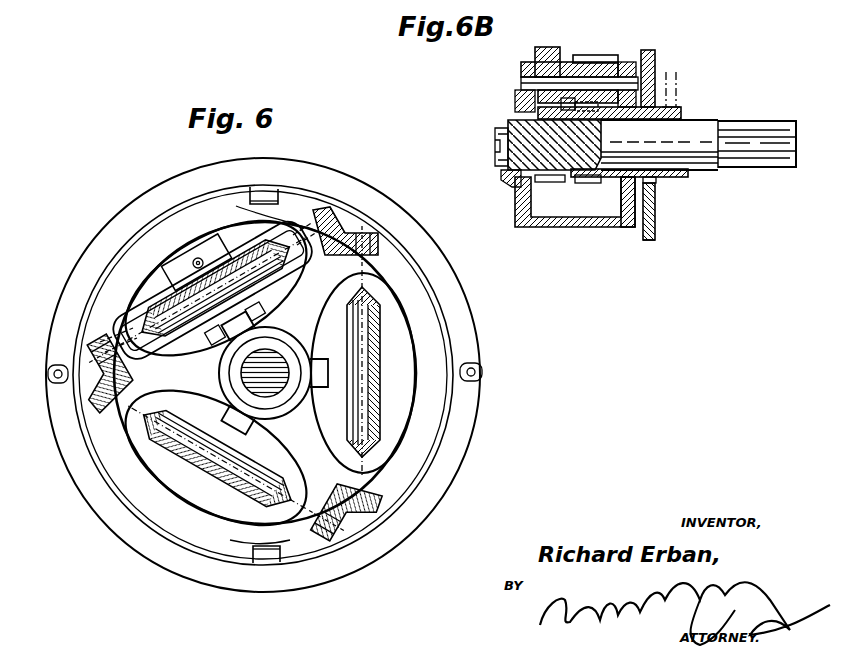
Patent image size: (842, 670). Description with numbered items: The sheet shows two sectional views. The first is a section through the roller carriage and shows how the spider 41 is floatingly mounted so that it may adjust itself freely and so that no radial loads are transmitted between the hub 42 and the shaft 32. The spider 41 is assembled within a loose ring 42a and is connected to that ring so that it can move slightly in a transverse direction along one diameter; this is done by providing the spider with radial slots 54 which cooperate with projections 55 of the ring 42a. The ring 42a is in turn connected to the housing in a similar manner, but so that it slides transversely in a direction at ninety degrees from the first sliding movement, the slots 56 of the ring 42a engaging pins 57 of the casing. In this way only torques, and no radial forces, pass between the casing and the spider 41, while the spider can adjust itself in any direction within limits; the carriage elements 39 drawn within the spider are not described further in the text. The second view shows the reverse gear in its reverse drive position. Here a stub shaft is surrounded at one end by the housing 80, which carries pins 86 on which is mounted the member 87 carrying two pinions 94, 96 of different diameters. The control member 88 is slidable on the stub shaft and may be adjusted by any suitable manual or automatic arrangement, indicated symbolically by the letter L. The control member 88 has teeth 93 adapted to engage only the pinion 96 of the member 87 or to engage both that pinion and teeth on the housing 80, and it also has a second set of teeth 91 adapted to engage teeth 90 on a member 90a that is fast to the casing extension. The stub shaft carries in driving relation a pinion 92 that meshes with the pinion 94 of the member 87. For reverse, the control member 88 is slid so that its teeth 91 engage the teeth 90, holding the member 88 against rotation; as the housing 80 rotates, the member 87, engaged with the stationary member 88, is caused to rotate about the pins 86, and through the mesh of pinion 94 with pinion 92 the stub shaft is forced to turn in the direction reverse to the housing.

In FIG. 6, the shaft 32 is at (268, 382).
In FIG. 6, the vane / lever 39 is at (155, 292).
In FIG. 6, the spider 41 is at (398, 280).
In FIG. 6, the hub 42 is at (266, 356).
In FIG. 6, the loose ring 42a is at (452, 291).
In FIG. 6, the radial slots 54 is at (256, 210).
In FIG. 6, the projections 55 is at (262, 195).
In FIG. 6, the slots 56 is at (58, 366).
In FIG. 6, the pins 57 is at (56, 384).
In FIG. 6B, the housing 80 is at (540, 228).
In FIG. 6B, the pins 86 is at (655, 62).
In FIG. 6B, the member 87 is at (568, 62).
In FIG. 6B, the control member 88 is at (618, 212).
In FIG. 6B, the teeth 90 is at (657, 200).
In FIG. 6B, the member 90a is at (650, 242).
In FIG. 6B, the second set of teeth 91 is at (658, 184).
In FIG. 6B, the pinion 92 is at (546, 183).
In FIG. 6B, the teeth 93 is at (588, 183).
In FIG. 6B, the pinion 94 is at (535, 52).
In FIG. 6B, the pinion 96 is at (594, 56).
In FIG. 6B, the control arrangement L is at (680, 80).